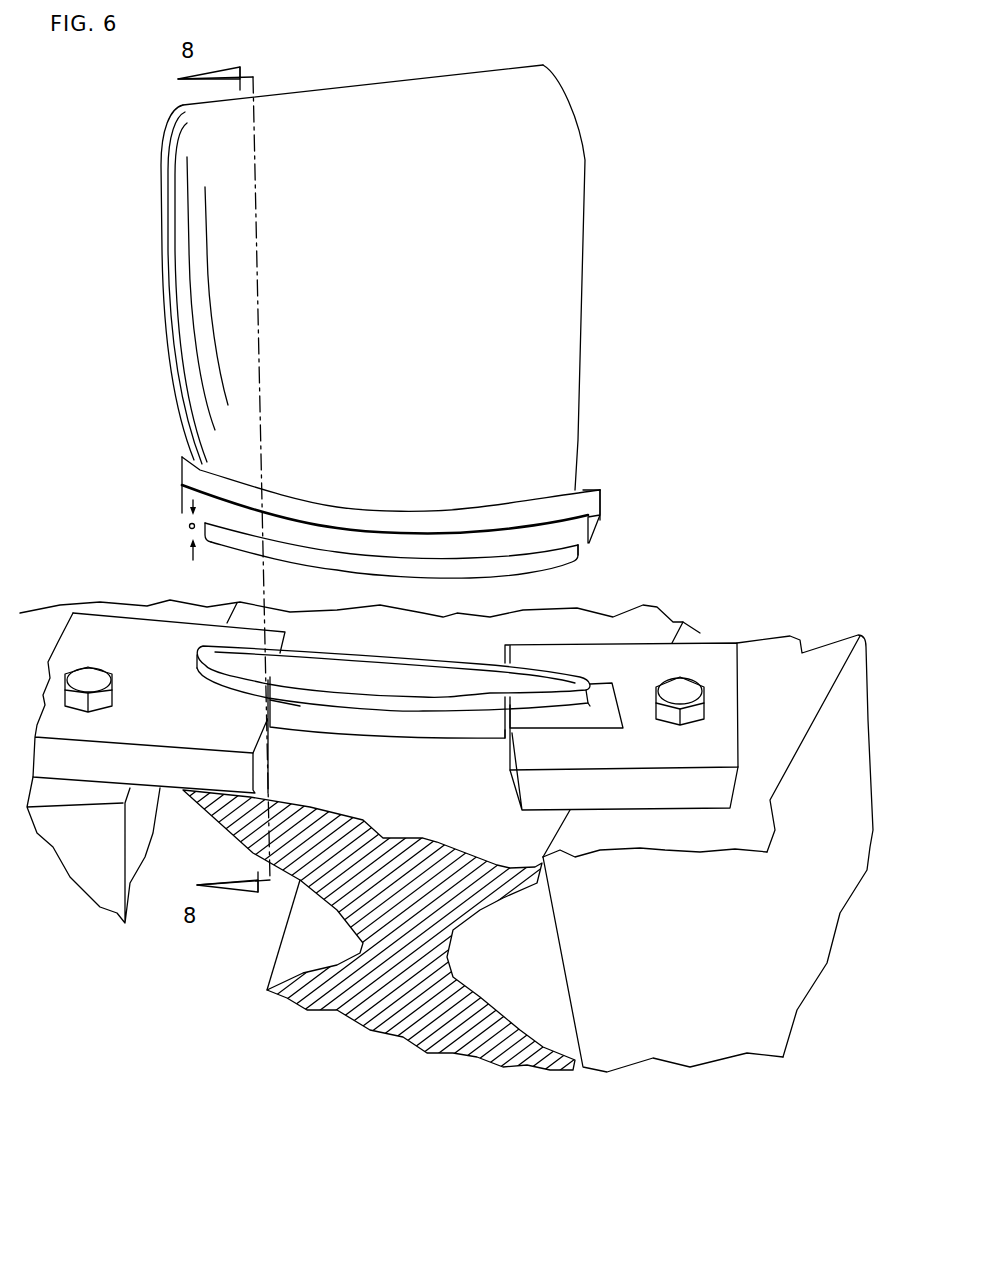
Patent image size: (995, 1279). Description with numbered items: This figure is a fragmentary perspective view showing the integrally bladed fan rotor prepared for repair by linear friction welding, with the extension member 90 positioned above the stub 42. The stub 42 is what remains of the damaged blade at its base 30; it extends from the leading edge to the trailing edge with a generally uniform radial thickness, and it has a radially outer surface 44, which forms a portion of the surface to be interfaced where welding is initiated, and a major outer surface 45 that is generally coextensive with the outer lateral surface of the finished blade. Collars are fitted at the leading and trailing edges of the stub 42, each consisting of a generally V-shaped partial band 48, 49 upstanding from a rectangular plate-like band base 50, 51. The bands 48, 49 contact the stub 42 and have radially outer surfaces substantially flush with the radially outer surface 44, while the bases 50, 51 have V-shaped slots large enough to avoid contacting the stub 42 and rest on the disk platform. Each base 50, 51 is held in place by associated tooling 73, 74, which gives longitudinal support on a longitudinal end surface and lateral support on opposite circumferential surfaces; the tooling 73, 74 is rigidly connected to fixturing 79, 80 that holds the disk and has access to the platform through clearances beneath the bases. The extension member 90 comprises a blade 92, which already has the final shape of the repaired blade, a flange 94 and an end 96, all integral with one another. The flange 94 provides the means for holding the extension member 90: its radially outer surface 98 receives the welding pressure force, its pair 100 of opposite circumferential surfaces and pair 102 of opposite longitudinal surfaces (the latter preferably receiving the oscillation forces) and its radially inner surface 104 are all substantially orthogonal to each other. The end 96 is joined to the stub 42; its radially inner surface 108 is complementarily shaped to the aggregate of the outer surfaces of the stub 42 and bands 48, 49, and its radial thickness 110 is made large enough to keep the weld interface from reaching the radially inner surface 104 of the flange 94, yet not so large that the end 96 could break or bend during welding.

The base 30 is at (430, 730).
The stub 42 is at (379, 725).
The radially outer surface 44 is at (388, 672).
The major outer surface 45 is at (350, 713).
The partial band 48 is at (588, 678).
The partial band 49 is at (200, 650).
The band base 50 is at (617, 722).
The band base 51 is at (165, 698).
The tooling 73 is at (705, 657).
The tooling 74 is at (105, 645).
The fixturing 79 is at (817, 630).
The fixturing 80 is at (62, 886).
The extension member 90 is at (166, 116).
The blade 92 is at (182, 227).
The flange 94 is at (186, 497).
The end 96 is at (240, 540).
The radially outer surface 98 is at (470, 520).
The pair of opposite circumferential surfaces 100 is at (583, 490).
The pair of opposite longitudinal surfaces 102 is at (182, 503).
The radially inner surface 104 is at (592, 532).
The radially inner surface 108 is at (258, 562).
The radial thickness 110 is at (189, 526).